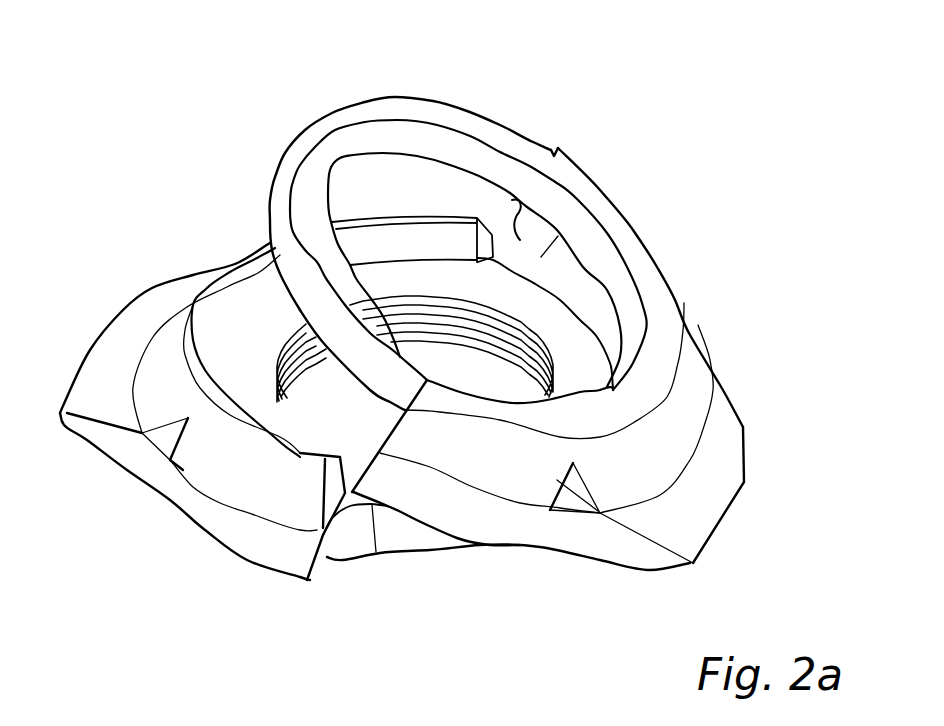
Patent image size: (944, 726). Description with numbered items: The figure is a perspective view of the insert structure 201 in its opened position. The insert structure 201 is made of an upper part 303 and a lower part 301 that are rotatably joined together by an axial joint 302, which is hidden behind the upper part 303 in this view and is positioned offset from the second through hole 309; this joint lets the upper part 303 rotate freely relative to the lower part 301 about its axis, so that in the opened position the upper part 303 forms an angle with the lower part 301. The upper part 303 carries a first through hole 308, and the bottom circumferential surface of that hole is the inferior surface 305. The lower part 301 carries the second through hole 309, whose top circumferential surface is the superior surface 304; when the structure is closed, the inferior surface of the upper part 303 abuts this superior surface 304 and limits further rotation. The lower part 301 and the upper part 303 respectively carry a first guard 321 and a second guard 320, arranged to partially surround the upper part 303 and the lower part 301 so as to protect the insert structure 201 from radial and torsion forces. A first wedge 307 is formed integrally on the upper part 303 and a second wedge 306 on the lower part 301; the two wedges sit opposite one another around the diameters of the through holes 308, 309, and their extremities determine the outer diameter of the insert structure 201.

The insert structure 201 is at (693, 132).
The lower part 301 is at (205, 533).
The axial joint 302 is at (570, 487).
The upper part 303 is at (460, 515).
The superior surface 304 is at (263, 332).
The inferior surface 305 is at (268, 206).
The second wedge 306 is at (105, 372).
The first wedge 307 is at (710, 498).
The first through hole 308 is at (513, 247).
The second through hole 309 is at (359, 414).
The second guard 320 is at (585, 275).
The first guard 321 is at (211, 315).